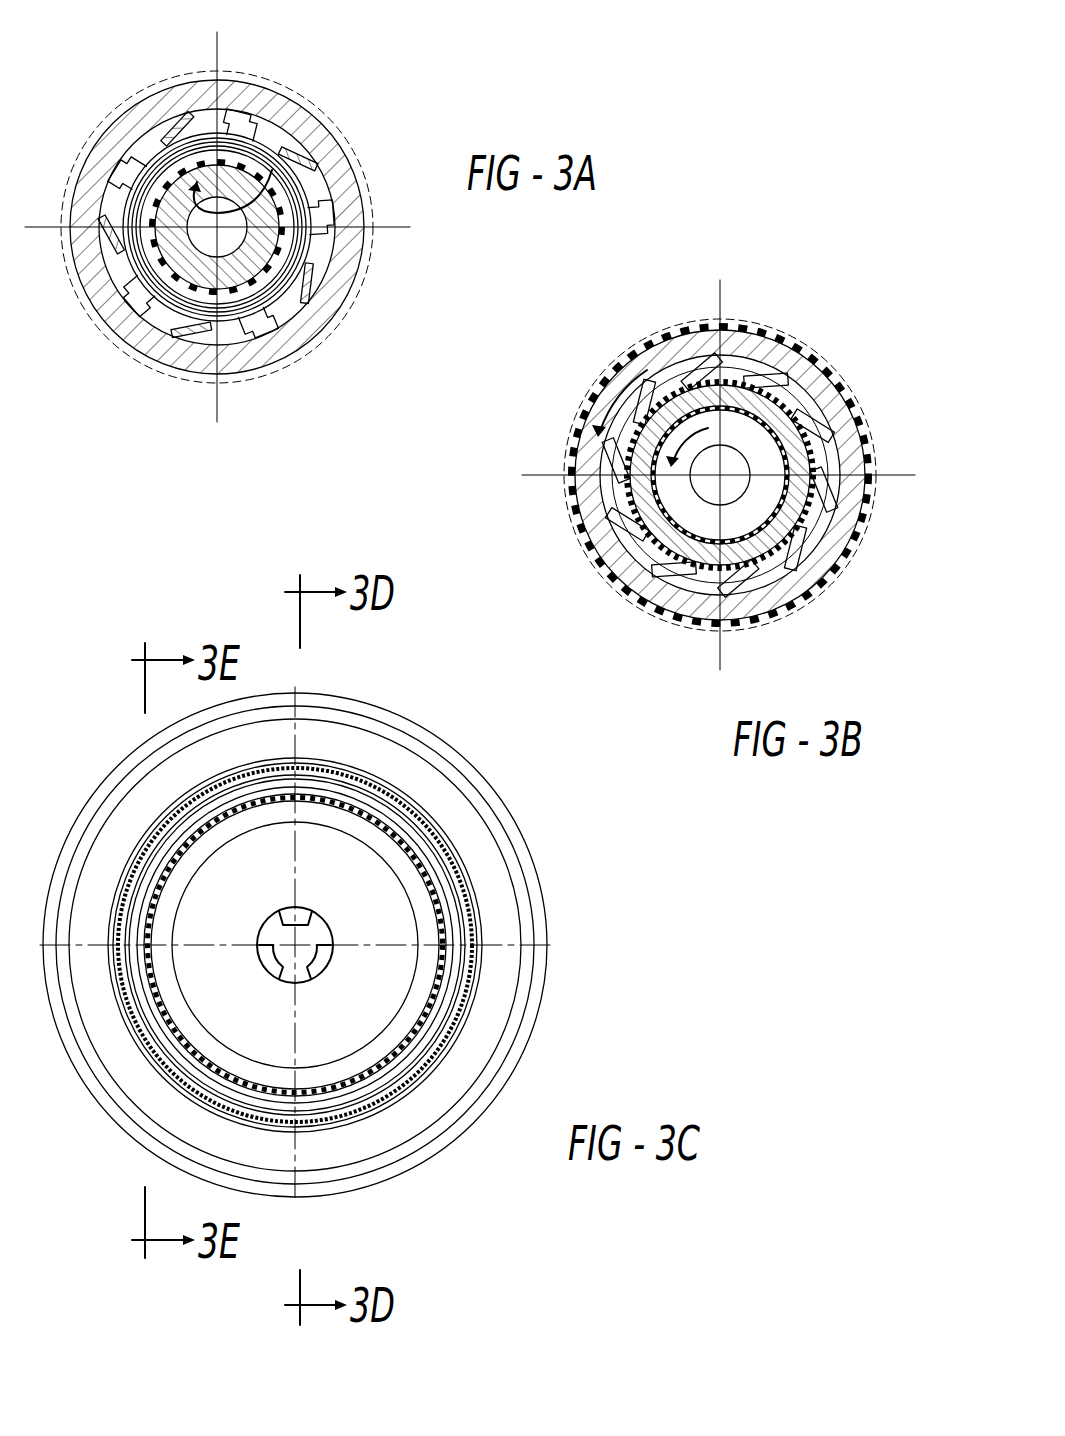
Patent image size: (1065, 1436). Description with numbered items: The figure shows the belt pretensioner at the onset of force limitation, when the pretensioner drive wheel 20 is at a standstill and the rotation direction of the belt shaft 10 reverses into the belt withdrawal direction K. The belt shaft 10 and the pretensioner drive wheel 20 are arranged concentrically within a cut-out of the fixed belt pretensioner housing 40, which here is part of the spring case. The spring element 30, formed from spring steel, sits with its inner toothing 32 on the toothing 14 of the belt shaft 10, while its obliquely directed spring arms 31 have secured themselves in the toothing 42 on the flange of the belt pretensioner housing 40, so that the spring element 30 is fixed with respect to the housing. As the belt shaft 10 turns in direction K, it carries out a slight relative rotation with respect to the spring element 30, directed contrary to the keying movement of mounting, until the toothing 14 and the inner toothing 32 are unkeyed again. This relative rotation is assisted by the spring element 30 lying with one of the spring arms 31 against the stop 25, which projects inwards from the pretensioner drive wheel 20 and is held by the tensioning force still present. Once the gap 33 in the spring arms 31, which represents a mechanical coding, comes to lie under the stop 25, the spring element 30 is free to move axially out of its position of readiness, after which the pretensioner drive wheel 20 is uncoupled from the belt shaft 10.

In FIG. 3C, the belt shaft 10 is at (358, 722).
In FIG. 3A, the toothing 14 is at (187, 170).
In FIG. 3C, the pretensioner drive wheel 20 is at (340, 791).
In FIG. 3A, the stop 25 is at (307, 293).
In FIG. 3A, the spring element 30 is at (241, 130).
In FIG. 3B, the spring arms 31 is at (707, 387).
In FIG. 3A, the inner toothing 32 is at (174, 170).
In FIG. 3A, the gap 33 is at (277, 302).
In FIG. 3C, the belt pretensioner housing 40 is at (350, 895).
In FIG. 3B, the toothing 42 is at (675, 390).
In FIG. 3A, the belt withdrawal direction K is at (272, 170).